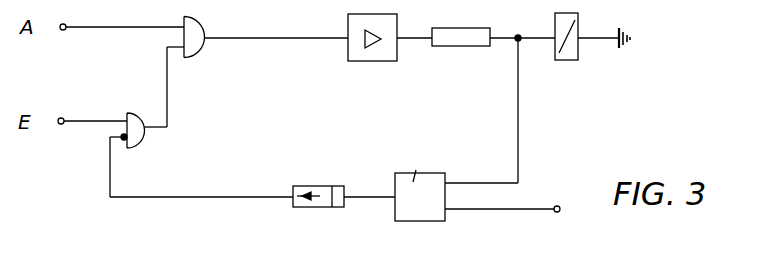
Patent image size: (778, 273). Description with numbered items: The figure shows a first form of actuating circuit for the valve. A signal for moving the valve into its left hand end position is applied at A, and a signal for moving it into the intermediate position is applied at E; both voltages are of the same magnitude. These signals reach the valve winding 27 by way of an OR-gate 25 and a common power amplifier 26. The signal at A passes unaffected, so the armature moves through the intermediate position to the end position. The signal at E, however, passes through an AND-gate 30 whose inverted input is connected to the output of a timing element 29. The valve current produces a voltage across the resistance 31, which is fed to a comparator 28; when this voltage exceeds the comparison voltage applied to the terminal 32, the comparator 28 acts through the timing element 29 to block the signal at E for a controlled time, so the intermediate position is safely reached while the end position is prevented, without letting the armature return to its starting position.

The OR-gate 25 is at (197, 53).
The common power amplifier 26 is at (375, 62).
The valve winding 27 is at (573, 61).
The comparator 28 is at (418, 222).
The timing element 29 is at (323, 208).
The AND-gate 30 is at (142, 142).
The resistance 31 is at (467, 47).
The terminal 32 is at (557, 212).